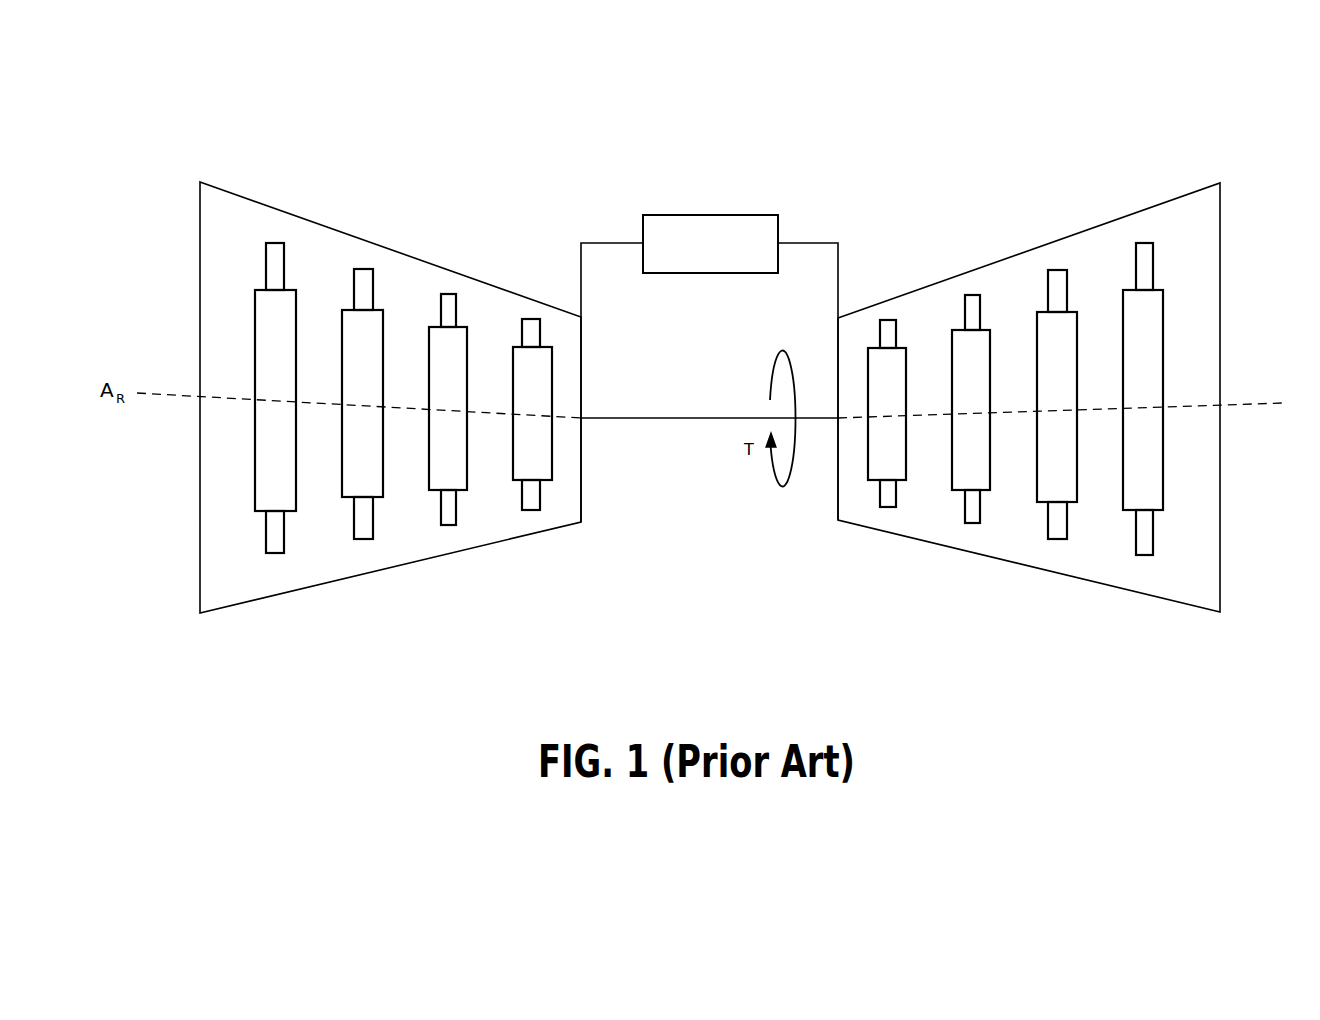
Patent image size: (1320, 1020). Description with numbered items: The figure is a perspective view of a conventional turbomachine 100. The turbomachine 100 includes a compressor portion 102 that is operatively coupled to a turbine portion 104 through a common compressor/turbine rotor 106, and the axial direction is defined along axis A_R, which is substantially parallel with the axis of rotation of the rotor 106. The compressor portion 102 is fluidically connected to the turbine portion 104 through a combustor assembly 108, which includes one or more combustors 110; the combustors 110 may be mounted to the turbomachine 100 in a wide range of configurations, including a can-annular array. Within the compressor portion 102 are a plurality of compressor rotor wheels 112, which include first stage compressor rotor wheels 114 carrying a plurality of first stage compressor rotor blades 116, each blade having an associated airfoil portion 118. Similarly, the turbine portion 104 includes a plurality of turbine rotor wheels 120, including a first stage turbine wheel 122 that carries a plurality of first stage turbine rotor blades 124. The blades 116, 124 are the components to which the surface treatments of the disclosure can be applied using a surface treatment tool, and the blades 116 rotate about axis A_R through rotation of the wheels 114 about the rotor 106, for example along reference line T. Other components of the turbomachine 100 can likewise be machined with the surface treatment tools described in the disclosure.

The turbomachine 100 is at (400, 138).
The compressor portion 102 is at (240, 618).
The turbine portion 104 is at (1122, 610).
The rotor 106 is at (648, 418).
The combustor assembly 108 is at (637, 178).
The combustor 110 is at (705, 215).
The compressor rotor wheels 112 is at (338, 568).
The first stage compressor rotor wheels 114 is at (263, 492).
The first stage compressor rotor blades 116 is at (252, 559).
The airfoil portion 118 is at (275, 547).
The turbine rotor wheels 120 is at (1176, 544).
The first stage turbine wheel 122 is at (898, 480).
The first stage turbine rotor blades 124 is at (893, 322).